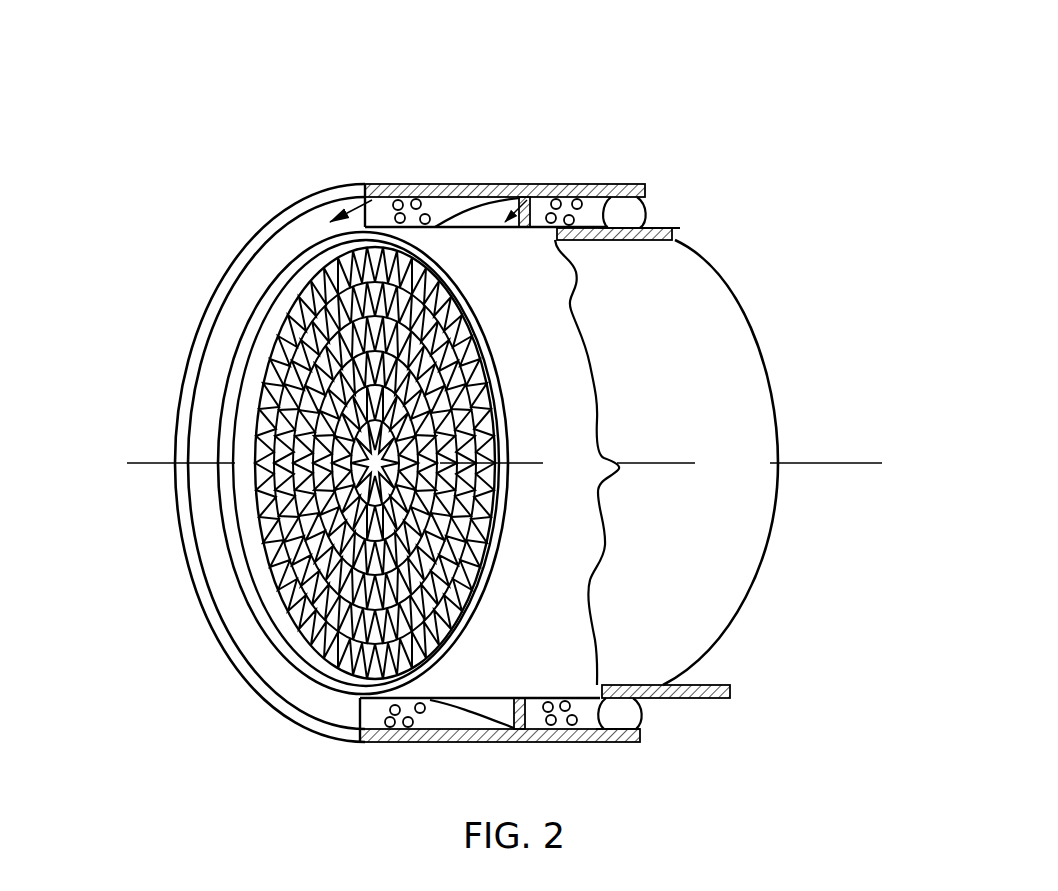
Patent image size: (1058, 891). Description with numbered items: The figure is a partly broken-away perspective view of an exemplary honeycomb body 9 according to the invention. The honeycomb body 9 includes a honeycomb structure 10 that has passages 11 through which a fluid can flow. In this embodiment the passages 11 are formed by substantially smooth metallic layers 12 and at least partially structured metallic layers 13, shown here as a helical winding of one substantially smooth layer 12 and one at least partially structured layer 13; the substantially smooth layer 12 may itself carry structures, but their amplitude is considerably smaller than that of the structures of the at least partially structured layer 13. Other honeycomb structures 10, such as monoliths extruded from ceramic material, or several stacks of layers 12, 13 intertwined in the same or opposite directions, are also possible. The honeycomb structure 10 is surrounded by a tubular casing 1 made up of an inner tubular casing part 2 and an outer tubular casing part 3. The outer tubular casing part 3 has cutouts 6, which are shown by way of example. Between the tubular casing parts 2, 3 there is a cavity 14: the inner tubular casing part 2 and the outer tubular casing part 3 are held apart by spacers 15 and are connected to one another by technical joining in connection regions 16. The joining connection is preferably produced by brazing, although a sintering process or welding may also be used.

The tubular casing 1 is at (348, 409).
The inner tubular casing part 2 is at (270, 297).
The outer tubular casing part 3 is at (308, 200).
The cutouts 6 is at (432, 192).
The honeycomb body 9 is at (504, 158).
The honeycomb structure 10 is at (740, 397).
The passages 11 is at (305, 640).
The substantially smooth metallic layer 12 is at (277, 582).
The at least partially structured metallic layer 13 is at (322, 688).
The cavity 14 is at (388, 196).
The spacers 15 is at (560, 186).
The connection regions 16 is at (645, 203).